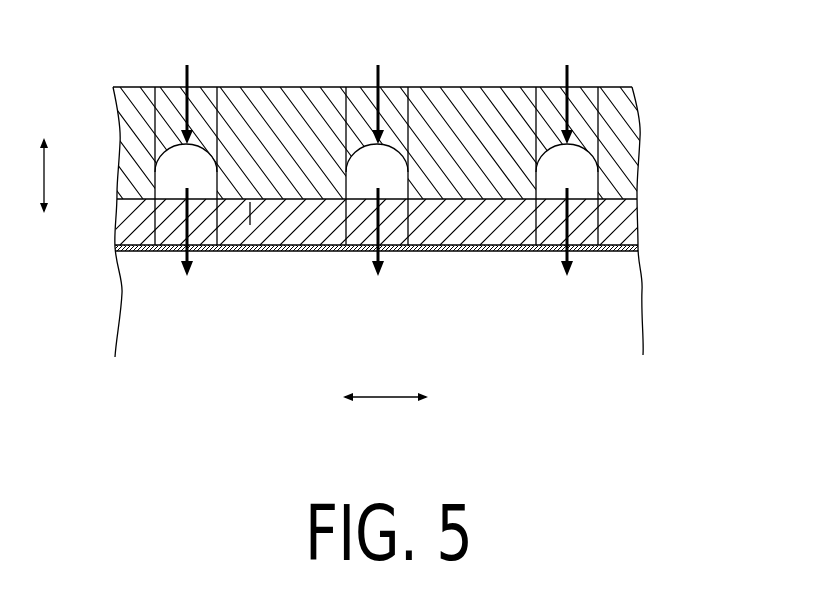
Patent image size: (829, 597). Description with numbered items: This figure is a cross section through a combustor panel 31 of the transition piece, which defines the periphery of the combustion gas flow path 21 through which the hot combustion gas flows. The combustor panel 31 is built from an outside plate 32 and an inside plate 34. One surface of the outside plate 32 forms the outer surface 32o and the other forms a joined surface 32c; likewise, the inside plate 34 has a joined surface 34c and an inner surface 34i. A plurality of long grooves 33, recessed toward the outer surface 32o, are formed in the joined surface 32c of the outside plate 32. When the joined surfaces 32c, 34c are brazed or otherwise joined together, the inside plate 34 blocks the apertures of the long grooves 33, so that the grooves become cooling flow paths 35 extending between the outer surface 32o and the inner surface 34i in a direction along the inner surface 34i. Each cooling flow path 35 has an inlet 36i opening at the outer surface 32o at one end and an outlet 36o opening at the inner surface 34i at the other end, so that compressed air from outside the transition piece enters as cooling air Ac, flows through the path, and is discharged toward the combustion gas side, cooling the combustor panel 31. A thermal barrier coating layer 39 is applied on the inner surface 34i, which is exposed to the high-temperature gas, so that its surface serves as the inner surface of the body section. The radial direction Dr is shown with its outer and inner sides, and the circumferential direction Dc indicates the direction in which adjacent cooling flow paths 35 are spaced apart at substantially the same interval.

The combustion gas flow path 21 is at (478, 346).
The combustor panel 31 is at (723, 125).
The outside plate 32 is at (633, 136).
The outer surface 32o is at (242, 87).
The joined surface 32c is at (249, 252).
The long groove 33 is at (553, 148).
The inside plate 34 is at (630, 220).
The joined surface 34c is at (288, 199).
The inner surface 34i is at (293, 252).
The cooling flow path 35 is at (588, 186).
The inlet 36i is at (597, 87).
The outlet 36o is at (540, 252).
The thermal barrier coating layer 39 is at (638, 248).
The cooling air Ac is at (377, 156).
The radial direction Dr is at (36, 175).
The circumferential direction Dc is at (385, 382).